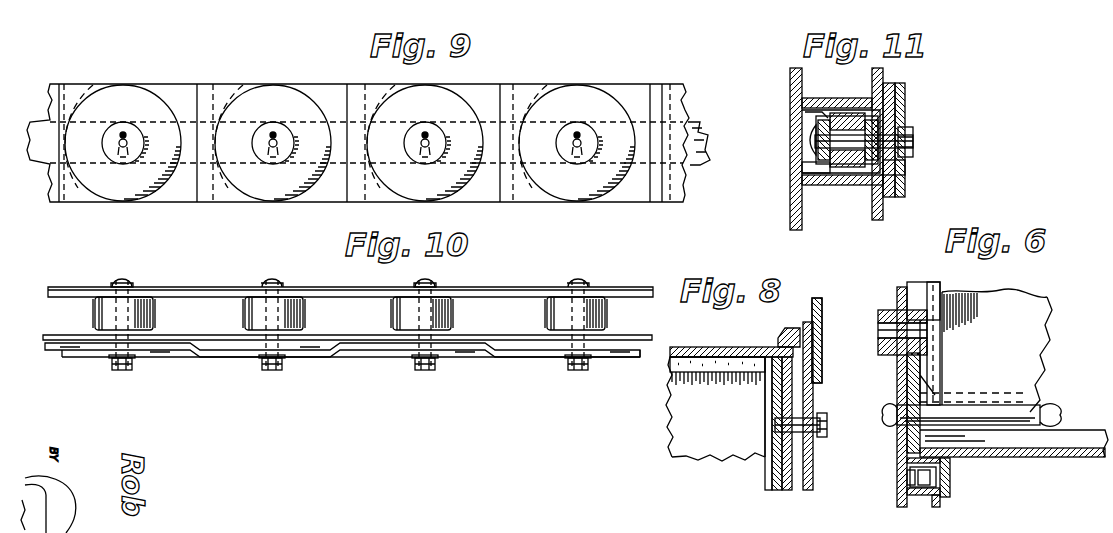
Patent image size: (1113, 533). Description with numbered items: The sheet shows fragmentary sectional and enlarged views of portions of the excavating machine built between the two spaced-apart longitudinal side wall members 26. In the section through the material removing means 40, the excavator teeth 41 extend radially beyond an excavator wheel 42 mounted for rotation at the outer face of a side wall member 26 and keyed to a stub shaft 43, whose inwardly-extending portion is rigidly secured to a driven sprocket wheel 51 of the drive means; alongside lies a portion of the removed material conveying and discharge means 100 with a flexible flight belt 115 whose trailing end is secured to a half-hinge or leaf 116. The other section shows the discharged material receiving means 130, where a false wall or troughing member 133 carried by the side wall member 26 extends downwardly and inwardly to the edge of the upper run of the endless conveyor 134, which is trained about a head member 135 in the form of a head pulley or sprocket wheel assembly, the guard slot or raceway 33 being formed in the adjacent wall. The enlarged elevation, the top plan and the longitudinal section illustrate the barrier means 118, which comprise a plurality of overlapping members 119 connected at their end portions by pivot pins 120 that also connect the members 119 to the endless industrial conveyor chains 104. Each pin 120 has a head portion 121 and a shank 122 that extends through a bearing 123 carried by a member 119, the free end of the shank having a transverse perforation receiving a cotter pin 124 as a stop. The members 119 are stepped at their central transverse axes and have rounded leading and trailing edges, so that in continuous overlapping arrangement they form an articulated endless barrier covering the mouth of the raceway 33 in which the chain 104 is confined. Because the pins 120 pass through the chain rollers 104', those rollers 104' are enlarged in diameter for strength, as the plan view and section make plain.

In FIG. 11, the side wall member 26 is at (792, 161).
In FIG. 8, the side wall member 26 is at (780, 338).
In FIG. 6, the side wall member 26 is at (901, 288).
In FIG. 11, the guard slot or raceway 33 is at (812, 112).
In FIG. 6, the guard slot or raceway 33 is at (905, 478).
In FIG. 8, the material removing means 40 is at (823, 294).
In FIG. 8, the excavator tooth 41 is at (822, 316).
In FIG. 8, the excavator wheel 42 is at (813, 398).
In FIG. 8, the stub shaft 43 is at (827, 425).
In FIG. 8, the driven sprocket wheel 51 is at (786, 476).
In FIG. 8, the removed material conveying and discharge means 100 is at (662, 437).
In FIG. 9, the endless industrial conveyor chain 104 is at (708, 129).
In FIG. 10, the endless industrial conveyor chain 104 is at (358, 304).
In FIG. 6, the endless industrial conveyor chain 104 is at (952, 484).
In FIG. 10, the roller 104' is at (350, 313).
In FIG. 11, the roller 104' is at (892, 129).
In FIG. 8, the flexible flight belt 115 is at (720, 445).
In FIG. 6, the flexible flight belt 115 is at (1050, 456).
In FIG. 8, the half-hinge or leaf 116 is at (692, 373).
In FIG. 6, the half-hinge or leaf 116 is at (880, 336).
In FIG. 9, the barrier means 118 is at (232, 75).
In FIG. 10, the barrier means 118 is at (404, 363).
In FIG. 11, the barrier means 118 is at (912, 86).
In FIG. 6, the barrier means 118 is at (960, 468).
In FIG. 9, the overlapping member 119 is at (563, 100).
In FIG. 10, the overlapping member 119 is at (243, 353).
In FIG. 11, the overlapping member 119 is at (887, 199).
In FIG. 10, the pivot pin 120 is at (124, 276).
In FIG. 10, the head portion 121 is at (134, 284).
In FIG. 11, the head portion 121 is at (808, 143).
In FIG. 9, the shank 122 is at (580, 138).
In FIG. 10, the shank 122 is at (307, 345).
In FIG. 11, the shank 122 is at (815, 165).
In FIG. 9, the bearing 123 is at (262, 136).
In FIG. 11, the bearing 123 is at (906, 170).
In FIG. 9, the cotter pin 124 is at (272, 137).
In FIG. 10, the cotter pin 124 is at (585, 369).
In FIG. 11, the cotter pin 124 is at (915, 140).
In FIG. 6, the discharged material receiving means 130 is at (1041, 289).
In FIG. 6, the false wall or troughing member 133 is at (936, 335).
In FIG. 6, the endless conveyor 134 is at (1012, 367).
In FIG. 6, the head member 135 is at (1030, 400).